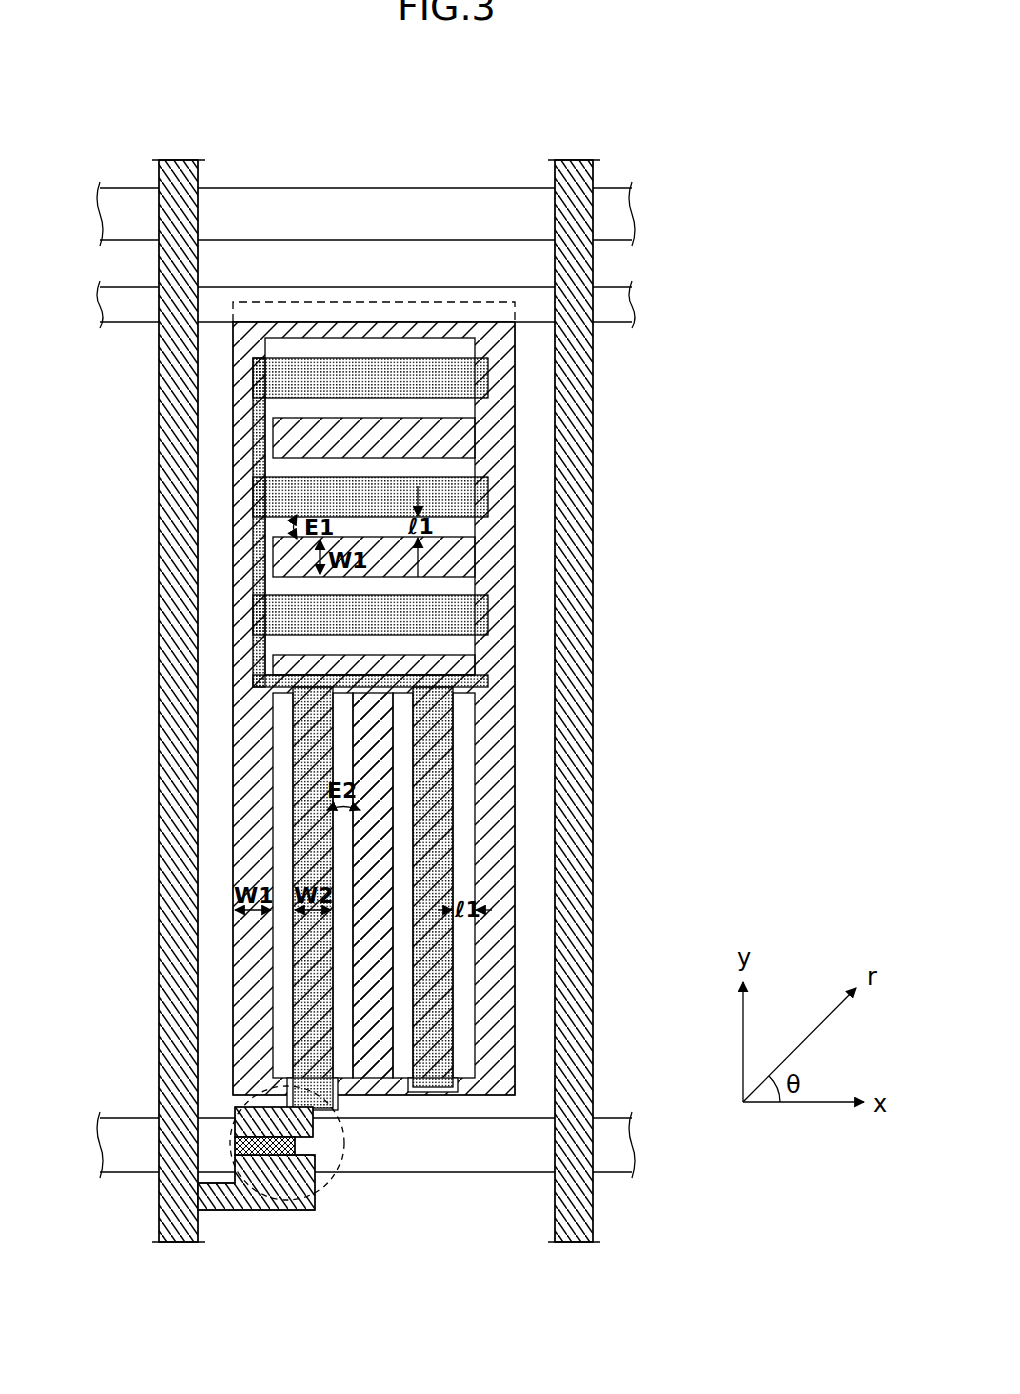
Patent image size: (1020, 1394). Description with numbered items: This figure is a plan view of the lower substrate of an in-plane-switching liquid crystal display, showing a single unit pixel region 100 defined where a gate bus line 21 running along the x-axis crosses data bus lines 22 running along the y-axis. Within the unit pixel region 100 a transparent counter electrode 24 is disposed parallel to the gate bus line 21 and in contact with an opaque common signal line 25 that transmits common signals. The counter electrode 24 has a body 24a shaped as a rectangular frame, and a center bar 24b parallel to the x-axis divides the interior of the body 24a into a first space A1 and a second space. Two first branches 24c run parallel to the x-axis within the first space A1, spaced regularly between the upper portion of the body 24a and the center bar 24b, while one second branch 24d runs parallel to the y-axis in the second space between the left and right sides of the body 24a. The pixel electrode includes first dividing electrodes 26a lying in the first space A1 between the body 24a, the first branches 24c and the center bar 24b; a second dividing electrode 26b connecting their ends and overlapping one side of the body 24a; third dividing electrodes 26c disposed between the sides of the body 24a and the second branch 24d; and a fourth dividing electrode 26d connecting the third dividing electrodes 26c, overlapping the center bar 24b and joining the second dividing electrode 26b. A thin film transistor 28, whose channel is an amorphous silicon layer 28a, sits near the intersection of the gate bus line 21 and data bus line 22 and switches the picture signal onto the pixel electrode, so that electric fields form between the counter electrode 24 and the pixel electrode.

The unit pixel region 100 is at (386, 278).
The gate bus line 21 is at (618, 218).
The data bus line 22 is at (178, 1241).
The counter electrode 24 is at (713, 841).
The body 24a is at (492, 379).
The center bar 24b is at (466, 667).
The first branch 24c is at (465, 556).
The second branch 24d is at (373, 862).
The common signal line 25 is at (618, 312).
The first dividing electrode 26a is at (287, 379).
The second dividing electrode 26b is at (258, 548).
The third dividing electrode 26c is at (312, 862).
The fourth dividing electrode 26d is at (260, 682).
The thin film transistor 28 is at (327, 1192).
The amorphous silicon layer 28a is at (266, 1152).
The first space A1 is at (533, 510).